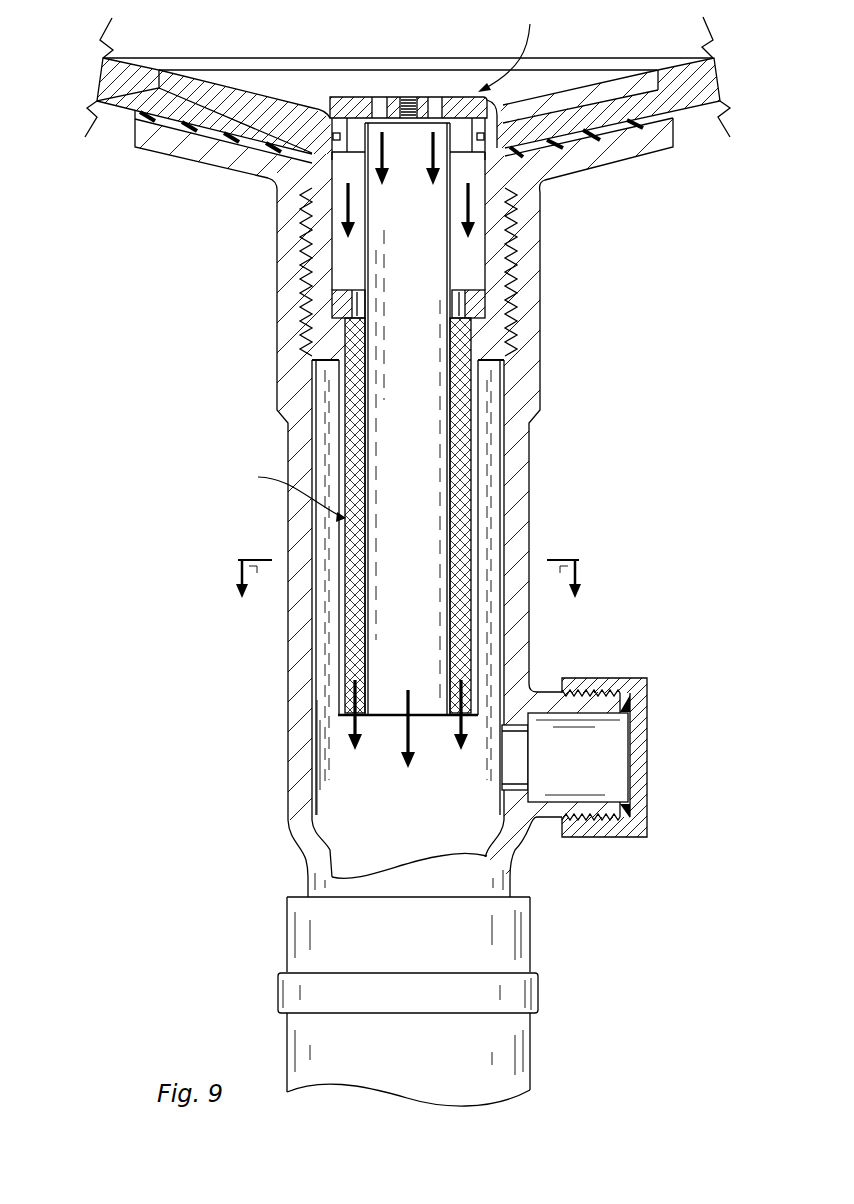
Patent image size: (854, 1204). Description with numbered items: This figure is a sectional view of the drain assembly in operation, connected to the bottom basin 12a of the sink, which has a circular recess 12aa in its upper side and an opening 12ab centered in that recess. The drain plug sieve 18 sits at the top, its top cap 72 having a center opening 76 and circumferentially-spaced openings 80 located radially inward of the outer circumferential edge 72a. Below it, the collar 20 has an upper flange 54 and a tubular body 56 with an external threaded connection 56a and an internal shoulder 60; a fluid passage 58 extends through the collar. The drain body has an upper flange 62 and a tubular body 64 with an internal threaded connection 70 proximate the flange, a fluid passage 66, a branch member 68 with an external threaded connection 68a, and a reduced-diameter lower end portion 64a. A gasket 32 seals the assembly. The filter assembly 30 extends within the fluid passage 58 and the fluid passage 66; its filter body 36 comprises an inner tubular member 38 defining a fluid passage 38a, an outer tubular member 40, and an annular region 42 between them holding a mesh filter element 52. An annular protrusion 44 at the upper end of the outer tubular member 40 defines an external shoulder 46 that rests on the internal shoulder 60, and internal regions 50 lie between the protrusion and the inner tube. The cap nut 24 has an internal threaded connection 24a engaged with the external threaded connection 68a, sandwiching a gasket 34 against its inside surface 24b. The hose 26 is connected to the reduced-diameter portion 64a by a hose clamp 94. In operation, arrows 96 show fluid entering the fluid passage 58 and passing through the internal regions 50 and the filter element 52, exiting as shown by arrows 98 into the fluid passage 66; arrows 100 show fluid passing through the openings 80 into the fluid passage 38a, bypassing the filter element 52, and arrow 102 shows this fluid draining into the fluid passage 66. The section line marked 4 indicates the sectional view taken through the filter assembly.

The circular recess 12aa is at (160, 72).
The collar 20 is at (247, 70).
The opening 12ab is at (315, 108).
The openings 80 is at (437, 97).
The center opening 76 is at (408, 97).
The top cap 72 is at (465, 97).
The drain plug sieve 18 is at (514, 46).
The outer circumferential edge 72a is at (500, 105).
The upper flange 54 is at (617, 78).
The bottom basin 12a is at (687, 110).
The gasket 32 is at (145, 120).
The upper flange 62 is at (198, 156).
The internal threaded connection 70 is at (312, 232).
The external threaded connection 56a is at (312, 262).
The internal shoulder 60 is at (333, 295).
The tubular body 56 is at (332, 362).
The filter assembly 30 is at (294, 515).
The fluid passage 38a is at (388, 414).
The inner tubular member 38 is at (452, 258).
The annular protrusion 44 is at (505, 272).
The external shoulder 46 is at (477, 315).
The filter body 36 is at (483, 413).
The outer tubular member 40 is at (478, 473).
The annular region 42 is at (467, 487).
The filter element 52 is at (463, 515).
The section line 4 is at (408, 592).
The tubular body 64 is at (288, 733).
The reduced-diameter lower end portion 64a is at (307, 884).
The arrows 98 is at (462, 727).
The arrow 102 is at (415, 727).
The fluid passage 66 is at (421, 842).
The arrows 100 is at (433, 137).
The arrows 96 is at (352, 207).
The fluid passage 58 is at (462, 271).
The internal regions 50 is at (458, 300).
The internal threaded connection 24a is at (602, 696).
The gasket 34 is at (633, 700).
The inside surface 24b is at (628, 756).
The cap nut 24 is at (647, 780).
The branch member 68 is at (542, 820).
The external threaded connection 68a is at (587, 822).
The hose clamp 94 is at (538, 993).
The hose 26 is at (530, 1050).